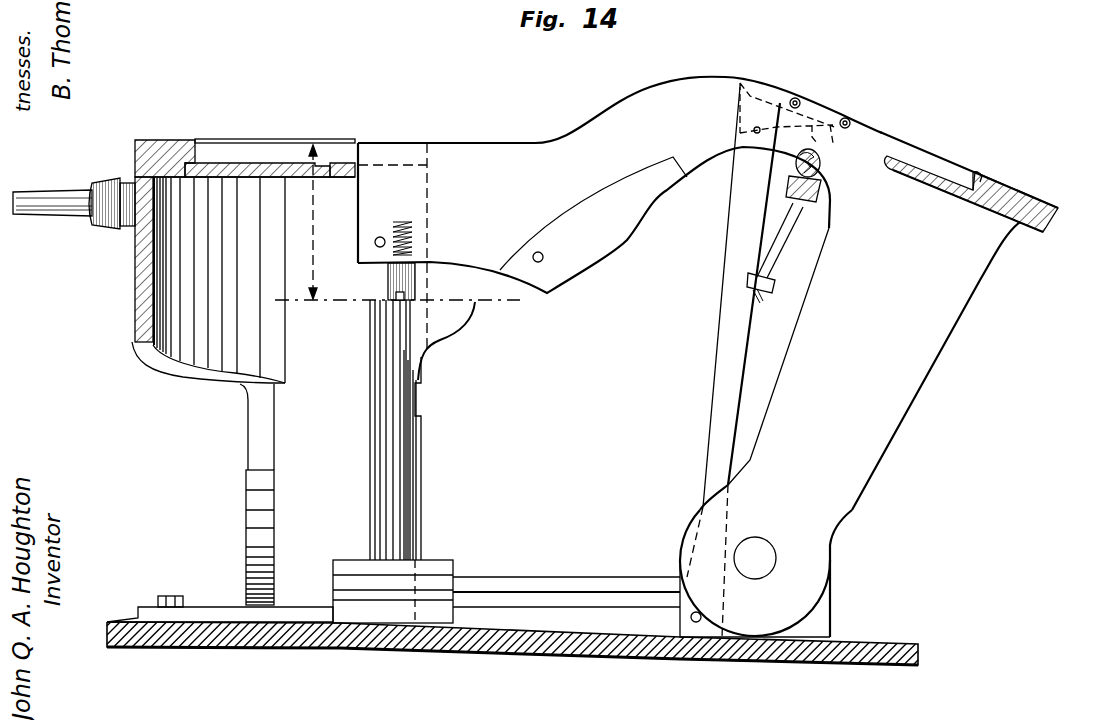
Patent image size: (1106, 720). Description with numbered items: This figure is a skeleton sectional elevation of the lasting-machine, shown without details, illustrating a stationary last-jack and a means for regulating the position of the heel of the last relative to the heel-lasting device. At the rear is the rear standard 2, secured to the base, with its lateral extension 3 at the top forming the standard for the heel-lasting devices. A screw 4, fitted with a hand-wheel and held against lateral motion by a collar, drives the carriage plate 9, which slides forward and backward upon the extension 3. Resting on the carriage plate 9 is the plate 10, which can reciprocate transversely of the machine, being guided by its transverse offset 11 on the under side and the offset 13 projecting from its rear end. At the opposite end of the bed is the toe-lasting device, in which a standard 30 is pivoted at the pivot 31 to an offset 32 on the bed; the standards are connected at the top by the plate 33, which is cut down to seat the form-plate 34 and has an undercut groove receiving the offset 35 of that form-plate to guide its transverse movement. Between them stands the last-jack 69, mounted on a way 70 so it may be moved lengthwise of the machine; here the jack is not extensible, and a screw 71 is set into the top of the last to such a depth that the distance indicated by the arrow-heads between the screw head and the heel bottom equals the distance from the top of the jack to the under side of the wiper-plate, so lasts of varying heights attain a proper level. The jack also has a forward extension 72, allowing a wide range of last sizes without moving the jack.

The rear standard 2 is at (281, 494).
The lateral extension 3 is at (229, 280).
The screw 4 is at (74, 199).
The plate (carriage) 9 is at (174, 140).
The plate 10 is at (275, 150).
The transverse offset 11 is at (314, 164).
The offset 13 is at (192, 153).
The standard 30 is at (874, 366).
The pivot 31 is at (755, 558).
The offset 32 is at (755, 601).
The plate 33 is at (988, 194).
The form-plate 34 is at (969, 163).
The offset 35 is at (995, 172).
The last-jack 69 is at (415, 430).
The way 70 is at (494, 586).
The screw 71 is at (415, 283).
The forward extension 72 is at (452, 322).